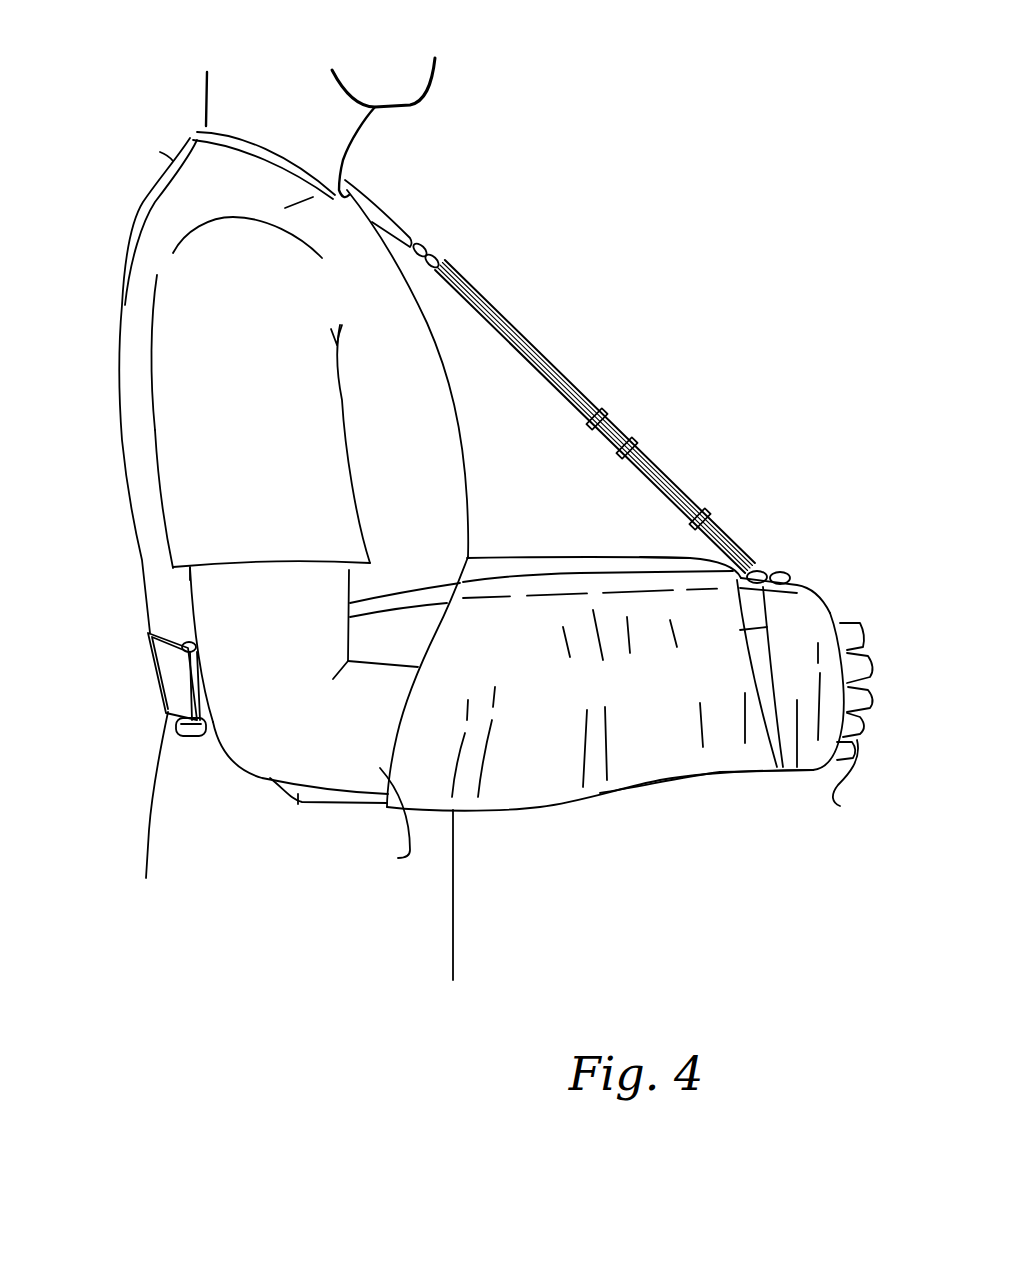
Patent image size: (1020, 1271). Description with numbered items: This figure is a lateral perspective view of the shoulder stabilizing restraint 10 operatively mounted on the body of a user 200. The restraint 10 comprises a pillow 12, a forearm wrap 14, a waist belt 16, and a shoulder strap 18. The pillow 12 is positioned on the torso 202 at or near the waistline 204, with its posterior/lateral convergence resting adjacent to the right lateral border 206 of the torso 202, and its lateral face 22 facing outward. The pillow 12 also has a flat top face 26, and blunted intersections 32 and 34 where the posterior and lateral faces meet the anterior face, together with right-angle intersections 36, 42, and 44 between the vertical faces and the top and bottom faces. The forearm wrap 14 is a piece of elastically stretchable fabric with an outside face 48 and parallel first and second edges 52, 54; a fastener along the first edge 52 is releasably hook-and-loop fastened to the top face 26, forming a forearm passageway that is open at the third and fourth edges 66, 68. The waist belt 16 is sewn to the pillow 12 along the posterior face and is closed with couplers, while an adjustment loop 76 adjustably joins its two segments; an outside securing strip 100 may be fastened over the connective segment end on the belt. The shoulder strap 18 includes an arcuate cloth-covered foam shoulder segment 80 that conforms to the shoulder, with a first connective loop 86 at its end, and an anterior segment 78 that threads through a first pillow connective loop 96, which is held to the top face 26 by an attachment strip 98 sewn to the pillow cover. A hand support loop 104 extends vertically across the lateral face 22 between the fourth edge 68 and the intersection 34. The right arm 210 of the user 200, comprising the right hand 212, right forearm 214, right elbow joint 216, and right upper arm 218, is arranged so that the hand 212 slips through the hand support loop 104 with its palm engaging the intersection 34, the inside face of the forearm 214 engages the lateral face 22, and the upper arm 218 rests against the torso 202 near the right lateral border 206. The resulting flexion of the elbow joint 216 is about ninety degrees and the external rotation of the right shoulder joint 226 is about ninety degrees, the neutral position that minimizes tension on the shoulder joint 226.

The shoulder stabilizing restraint 10 is at (560, 112).
The pillow 12 is at (538, 572).
The forearm wrap 14 is at (525, 768).
The waist belt 16 is at (158, 690).
The shoulder strap 18 is at (517, 322).
The lateral face 22 is at (300, 803).
The top face 26 is at (513, 570).
The intersection of posterior and anterior faces 32 is at (465, 558).
The intersection of lateral and anterior faces 34 is at (807, 591).
The intersection of posterior and top faces 36 is at (458, 585).
The intersection of lateral and bottom faces 42 is at (367, 803).
The intersection of anterior and top faces 44 is at (627, 556).
The outside face 48 is at (688, 752).
The first edge 52 is at (543, 578).
The second edge 54 is at (617, 790).
The third edge 66 is at (406, 697).
The fourth edge 68 is at (748, 628).
The adjustment loop 76 is at (185, 640).
The anterior segment 78 is at (552, 360).
The shoulder segment 80 is at (385, 210).
The first connective loop 86 is at (437, 254).
The first pillow connective loop 96 is at (781, 570).
The attachment strip 98 is at (788, 568).
The outside securing strip 100 is at (150, 664).
The hand support loop 104 is at (810, 612).
The user 200 is at (128, 242).
The torso 202 is at (124, 298).
The waistline 204 is at (167, 712).
The right lateral border 206 is at (152, 795).
The right arm 210 is at (167, 528).
The right hand 212 is at (858, 722).
The right forearm 214 is at (378, 819).
The right elbow joint 216 is at (263, 722).
The right upper arm 218 is at (158, 413).
The right shoulder joint 226 is at (160, 152).